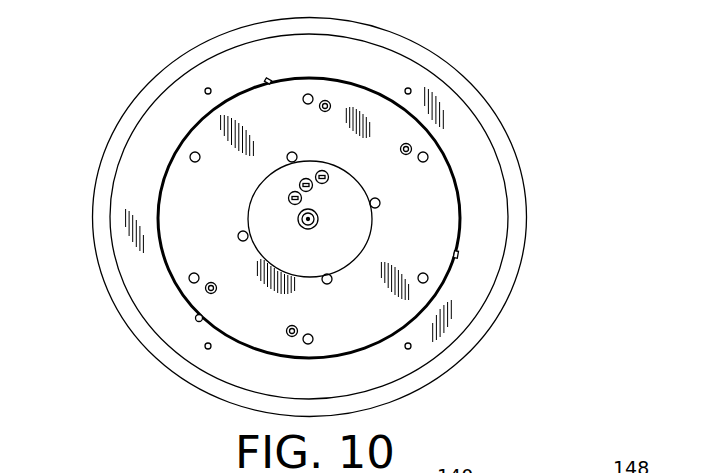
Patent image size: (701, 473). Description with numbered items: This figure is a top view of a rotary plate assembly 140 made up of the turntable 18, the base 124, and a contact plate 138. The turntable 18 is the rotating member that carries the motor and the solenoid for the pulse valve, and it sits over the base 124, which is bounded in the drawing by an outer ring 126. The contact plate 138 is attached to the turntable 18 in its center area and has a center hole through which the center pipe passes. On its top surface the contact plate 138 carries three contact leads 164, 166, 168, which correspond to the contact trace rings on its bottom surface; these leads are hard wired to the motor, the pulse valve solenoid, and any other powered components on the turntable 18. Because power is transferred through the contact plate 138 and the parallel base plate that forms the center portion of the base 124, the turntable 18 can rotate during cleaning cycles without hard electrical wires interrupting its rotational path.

The rotary plate assembly 140 is at (590, 73).
The outer ring 126 is at (407, 53).
The base 124 is at (473, 143).
The turntable 18 is at (435, 187).
The contact plate 138 is at (360, 231).
The contact lead 164 is at (289, 198).
The contact lead 166 is at (300, 184).
The contact lead 168 is at (317, 172).